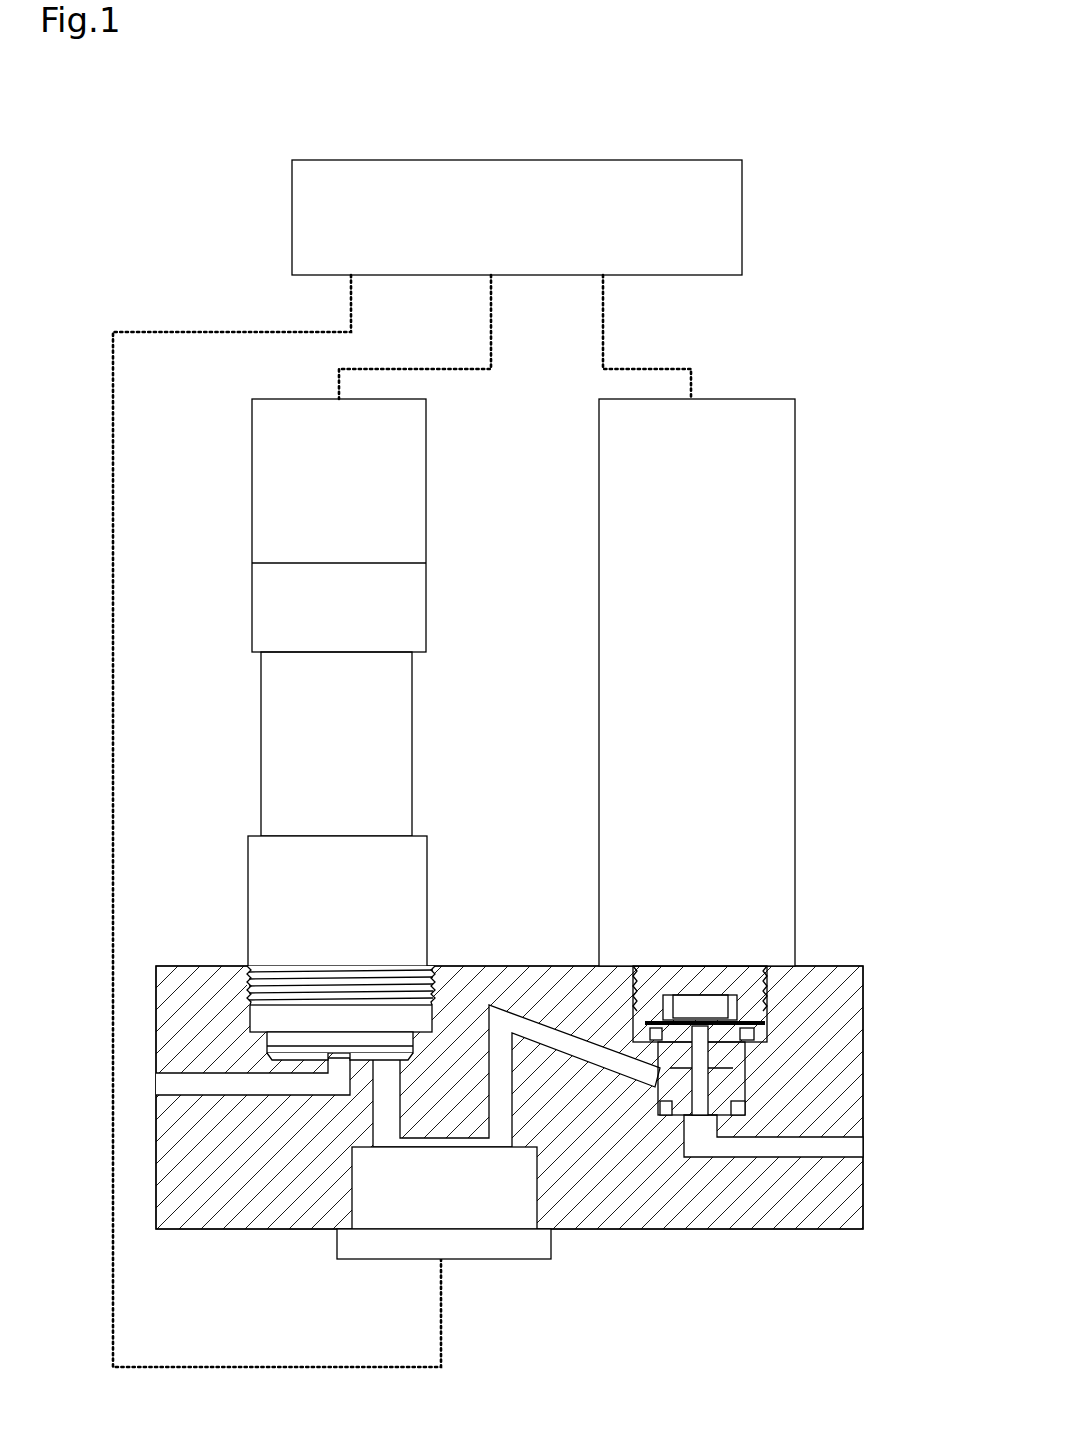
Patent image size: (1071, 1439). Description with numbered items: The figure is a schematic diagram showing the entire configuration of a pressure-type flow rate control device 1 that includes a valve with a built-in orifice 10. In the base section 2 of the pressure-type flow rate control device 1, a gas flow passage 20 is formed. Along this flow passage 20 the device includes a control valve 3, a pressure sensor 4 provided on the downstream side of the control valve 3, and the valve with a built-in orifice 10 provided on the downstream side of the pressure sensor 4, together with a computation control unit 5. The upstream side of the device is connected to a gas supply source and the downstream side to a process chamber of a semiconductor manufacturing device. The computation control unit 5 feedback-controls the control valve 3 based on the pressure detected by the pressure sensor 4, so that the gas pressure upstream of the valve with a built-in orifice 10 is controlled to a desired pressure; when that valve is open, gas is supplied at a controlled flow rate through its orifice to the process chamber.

The pressure-type flow rate control device 1 is at (895, 143).
The base section 2 is at (509, 1155).
The control valve 3 is at (275, 738).
The pressure sensor 4 is at (488, 1233).
The computation control unit 5 is at (742, 223).
The valve with a built-in orifice 10 is at (795, 740).
The gas flow passage 20 is at (592, 1063).